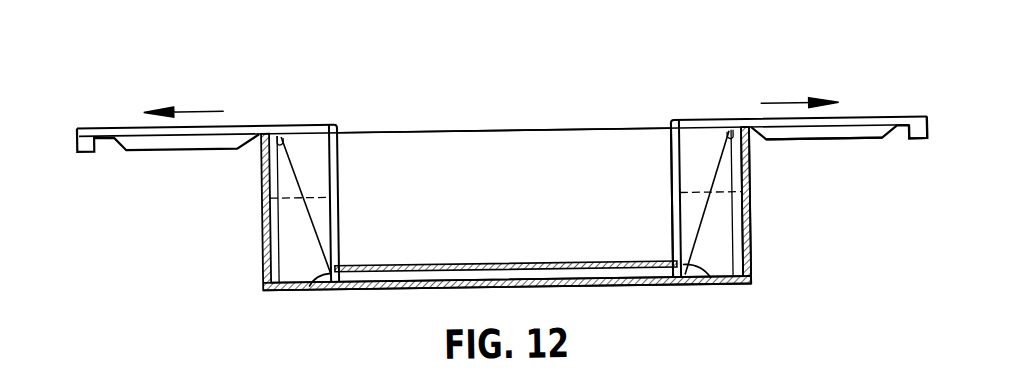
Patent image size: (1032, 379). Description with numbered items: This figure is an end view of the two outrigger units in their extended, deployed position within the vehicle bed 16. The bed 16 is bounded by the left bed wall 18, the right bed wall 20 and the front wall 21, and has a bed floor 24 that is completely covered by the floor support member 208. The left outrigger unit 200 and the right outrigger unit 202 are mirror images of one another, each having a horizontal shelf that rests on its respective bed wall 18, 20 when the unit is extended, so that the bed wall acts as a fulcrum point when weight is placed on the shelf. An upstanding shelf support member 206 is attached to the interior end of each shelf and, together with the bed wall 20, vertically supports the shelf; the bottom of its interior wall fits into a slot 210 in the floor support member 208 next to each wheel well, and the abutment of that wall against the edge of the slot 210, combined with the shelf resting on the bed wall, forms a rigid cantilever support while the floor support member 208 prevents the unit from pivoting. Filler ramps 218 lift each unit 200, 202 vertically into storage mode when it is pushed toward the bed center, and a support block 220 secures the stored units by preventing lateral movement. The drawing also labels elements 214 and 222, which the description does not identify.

The vehicle bed 16 is at (580, 153).
The front wall 21 is at (430, 136).
The left outrigger unit 200 is at (130, 120).
The right outrigger unit 202 is at (862, 123).
The left bed wall 18 is at (262, 188).
The right bed wall 20 is at (750, 220).
The bed floor 24 is at (402, 287).
The floor support member 208 is at (462, 262).
The slot 210 is at (308, 284).
The inner partition wall 214 is at (697, 140).
The upstanding shelf support member 206 is at (670, 187).
The diagonal strut 222 is at (718, 243).
The filler ramps 218 is at (815, 138).
The support block 220 is at (917, 149).